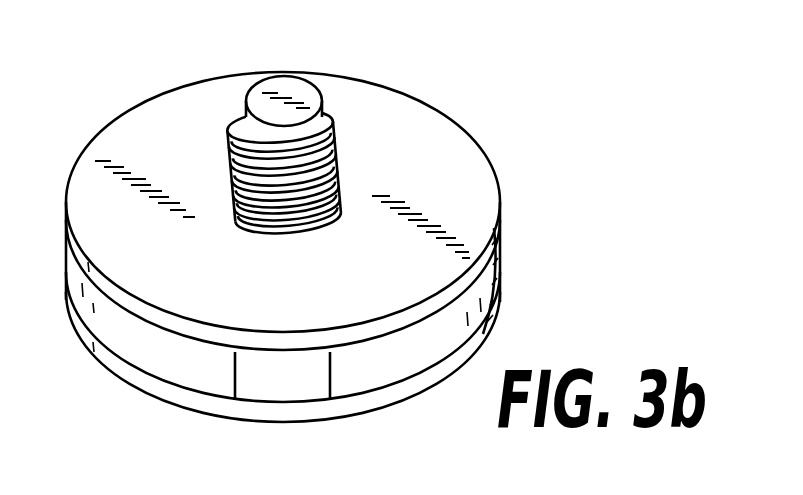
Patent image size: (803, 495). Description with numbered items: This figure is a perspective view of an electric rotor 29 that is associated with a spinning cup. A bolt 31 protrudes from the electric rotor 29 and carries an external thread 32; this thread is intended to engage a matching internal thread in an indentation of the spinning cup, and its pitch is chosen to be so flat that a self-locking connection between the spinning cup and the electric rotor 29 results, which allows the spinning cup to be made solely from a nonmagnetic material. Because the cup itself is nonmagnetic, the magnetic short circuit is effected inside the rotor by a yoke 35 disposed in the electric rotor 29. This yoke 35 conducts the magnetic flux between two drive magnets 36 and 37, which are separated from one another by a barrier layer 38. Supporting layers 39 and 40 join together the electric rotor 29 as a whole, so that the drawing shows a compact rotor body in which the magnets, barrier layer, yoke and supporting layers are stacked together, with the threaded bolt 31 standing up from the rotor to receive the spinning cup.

The electric rotor 29 is at (512, 302).
The bolt 31 is at (310, 95).
The external thread 32 is at (328, 170).
The yoke 35 is at (468, 282).
The drive magnet 36 is at (402, 363).
The drive magnet 37 is at (190, 370).
The barrier layer 38 is at (270, 382).
The supporting layer 39 is at (347, 410).
The supporting layer 40 is at (482, 178).